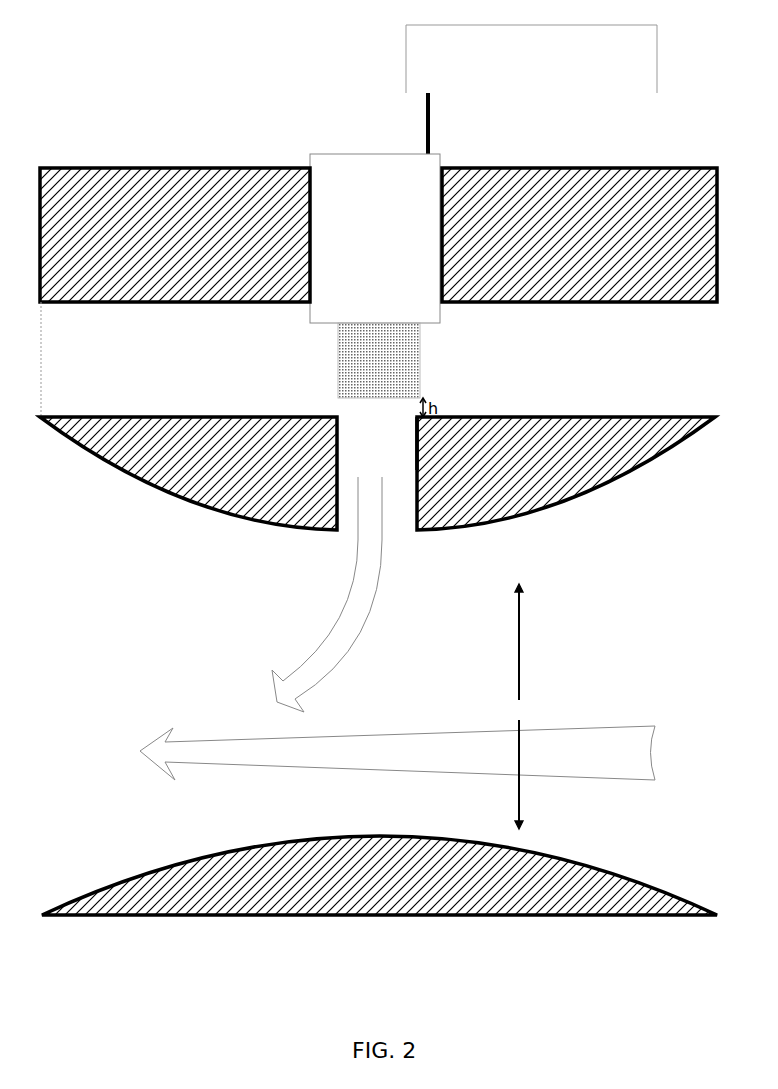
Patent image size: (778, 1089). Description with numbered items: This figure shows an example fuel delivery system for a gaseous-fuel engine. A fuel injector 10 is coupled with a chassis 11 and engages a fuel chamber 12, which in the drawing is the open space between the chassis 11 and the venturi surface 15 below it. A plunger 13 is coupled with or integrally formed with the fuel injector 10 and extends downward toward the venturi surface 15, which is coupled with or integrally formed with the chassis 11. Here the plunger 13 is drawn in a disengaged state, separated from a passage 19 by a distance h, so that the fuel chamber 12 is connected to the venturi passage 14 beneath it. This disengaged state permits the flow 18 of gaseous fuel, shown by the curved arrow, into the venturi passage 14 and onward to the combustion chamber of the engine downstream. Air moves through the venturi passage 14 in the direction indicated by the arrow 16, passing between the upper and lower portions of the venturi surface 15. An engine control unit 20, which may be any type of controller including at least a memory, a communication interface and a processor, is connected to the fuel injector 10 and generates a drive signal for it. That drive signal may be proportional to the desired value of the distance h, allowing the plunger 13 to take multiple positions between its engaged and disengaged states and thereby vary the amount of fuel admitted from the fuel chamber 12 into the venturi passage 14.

The fuel injector 10 is at (380, 170).
The chassis 11 is at (120, 168).
The fuel chamber 12 is at (296, 359).
The plunger 13 is at (340, 356).
The venturi passage 14 is at (519, 706).
The venturi surface 15 is at (196, 500).
The arrow 16 is at (152, 752).
The flow 18 is at (305, 666).
The passage 19 is at (416, 436).
The engine control unit 20 is at (531, 89).